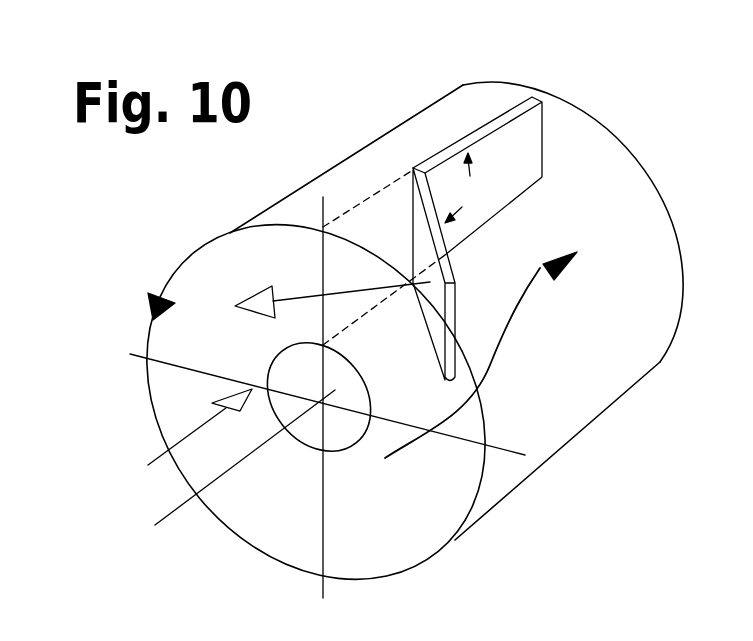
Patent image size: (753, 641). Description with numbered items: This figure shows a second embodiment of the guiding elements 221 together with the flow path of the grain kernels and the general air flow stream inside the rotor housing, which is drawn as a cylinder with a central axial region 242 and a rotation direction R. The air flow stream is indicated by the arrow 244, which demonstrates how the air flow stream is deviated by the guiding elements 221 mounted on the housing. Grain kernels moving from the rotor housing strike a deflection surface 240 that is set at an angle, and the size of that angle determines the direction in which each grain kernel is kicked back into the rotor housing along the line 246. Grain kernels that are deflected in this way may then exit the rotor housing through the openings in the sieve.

The guiding elements 221 is at (497, 148).
The deflection surface 240 is at (425, 252).
The axial core region 242 is at (307, 430).
The arrow indicating air flow stream 244 is at (522, 307).
The line of kicked-back grain kernel 246 is at (175, 507).
The rotation direction R is at (172, 282).